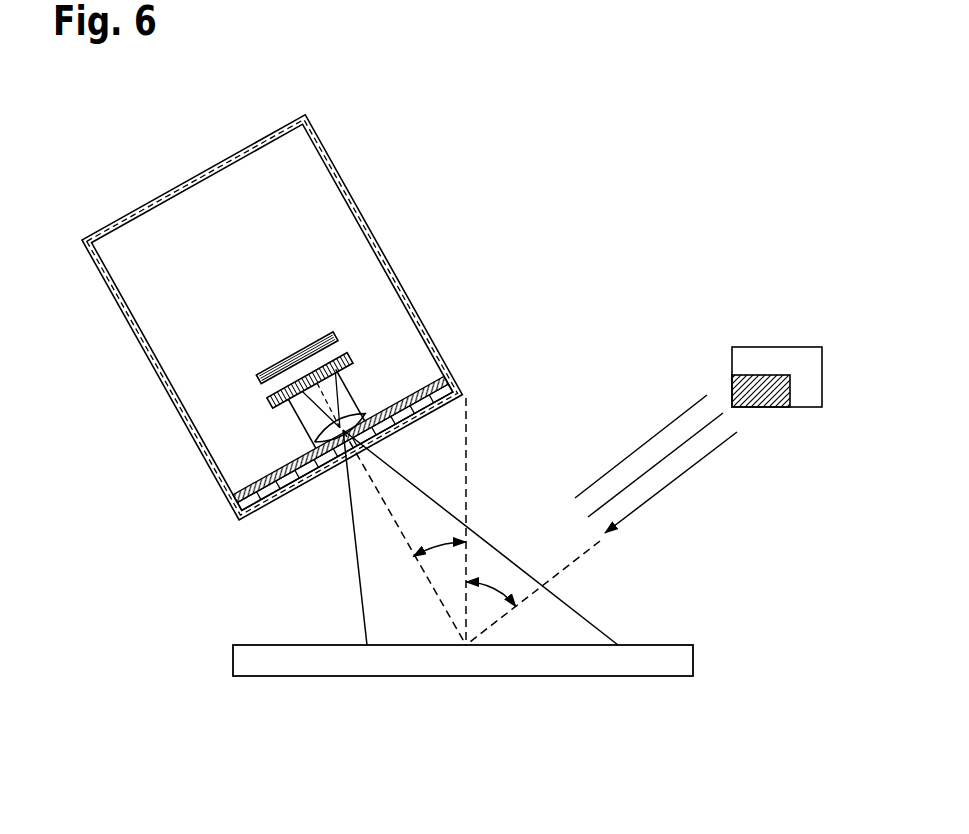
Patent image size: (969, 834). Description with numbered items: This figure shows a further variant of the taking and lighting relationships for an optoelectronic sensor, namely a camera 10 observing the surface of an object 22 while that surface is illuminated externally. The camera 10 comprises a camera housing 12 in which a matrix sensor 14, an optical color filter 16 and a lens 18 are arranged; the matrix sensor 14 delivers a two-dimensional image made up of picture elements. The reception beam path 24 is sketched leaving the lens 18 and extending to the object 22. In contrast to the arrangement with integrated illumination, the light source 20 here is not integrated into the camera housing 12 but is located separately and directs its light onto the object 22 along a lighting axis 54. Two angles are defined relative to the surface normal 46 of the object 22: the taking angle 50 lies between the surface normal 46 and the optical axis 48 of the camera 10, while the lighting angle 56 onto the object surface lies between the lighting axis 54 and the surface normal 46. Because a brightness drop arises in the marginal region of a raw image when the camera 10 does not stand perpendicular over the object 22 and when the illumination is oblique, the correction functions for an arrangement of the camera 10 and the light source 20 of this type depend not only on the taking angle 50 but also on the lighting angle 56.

The camera 10 is at (497, 236).
The camera housing 12 is at (167, 190).
The matrix sensor 14 is at (300, 358).
The optical color filter 16 is at (347, 362).
The lens 18 is at (307, 445).
The light source 20 is at (773, 357).
The object 22 is at (670, 648).
The reception beam path 24 is at (345, 507).
The surface normal 46 is at (467, 452).
The optical axis 48 is at (428, 586).
The taking angle 50 is at (463, 520).
The lighting axis 54 is at (566, 569).
The lighting angle 56 is at (495, 578).